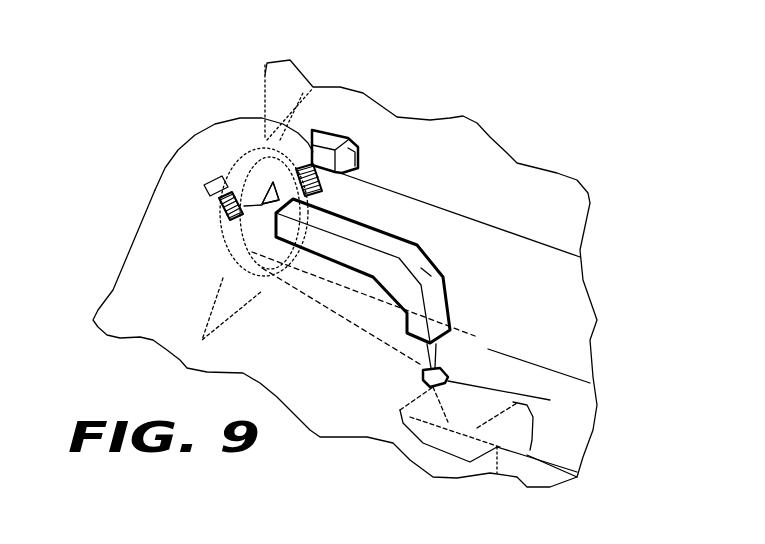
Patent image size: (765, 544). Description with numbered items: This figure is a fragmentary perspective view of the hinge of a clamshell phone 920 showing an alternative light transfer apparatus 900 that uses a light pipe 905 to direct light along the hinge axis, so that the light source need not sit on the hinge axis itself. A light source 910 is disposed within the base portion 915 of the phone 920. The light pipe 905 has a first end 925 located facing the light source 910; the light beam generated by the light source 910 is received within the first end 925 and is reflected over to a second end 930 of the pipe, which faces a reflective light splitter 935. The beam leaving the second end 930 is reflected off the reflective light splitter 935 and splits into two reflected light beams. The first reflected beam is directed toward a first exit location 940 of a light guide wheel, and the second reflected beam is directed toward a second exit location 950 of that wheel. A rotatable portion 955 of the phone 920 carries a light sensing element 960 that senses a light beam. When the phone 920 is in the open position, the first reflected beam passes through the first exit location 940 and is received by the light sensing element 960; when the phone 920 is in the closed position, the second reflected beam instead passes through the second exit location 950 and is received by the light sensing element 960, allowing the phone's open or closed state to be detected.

The light transfer apparatus 900 is at (547, 293).
The light pipe 905 is at (450, 245).
The light source 910 is at (440, 387).
The base portion 915 is at (131, 235).
The clamshell phone 920 is at (203, 127).
The first end 925 is at (450, 337).
The second end 930 is at (277, 215).
The reflective light splitter 935 is at (298, 178).
The first exit location 940 is at (273, 180).
The second exit location 950 is at (220, 205).
The rotatable portion 955 is at (265, 83).
The light sensing element 960 is at (357, 167).